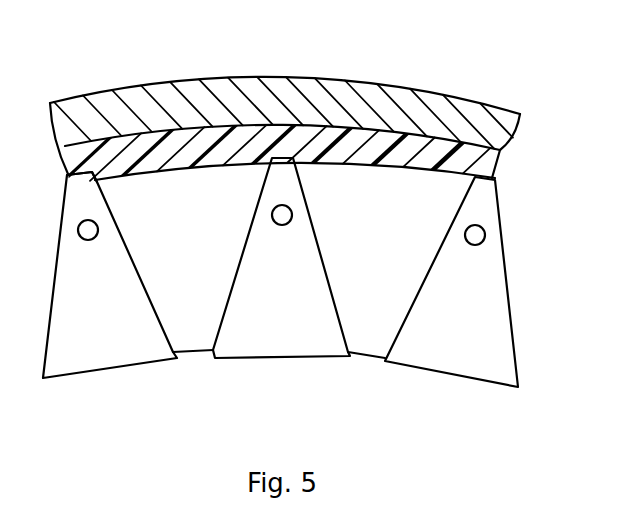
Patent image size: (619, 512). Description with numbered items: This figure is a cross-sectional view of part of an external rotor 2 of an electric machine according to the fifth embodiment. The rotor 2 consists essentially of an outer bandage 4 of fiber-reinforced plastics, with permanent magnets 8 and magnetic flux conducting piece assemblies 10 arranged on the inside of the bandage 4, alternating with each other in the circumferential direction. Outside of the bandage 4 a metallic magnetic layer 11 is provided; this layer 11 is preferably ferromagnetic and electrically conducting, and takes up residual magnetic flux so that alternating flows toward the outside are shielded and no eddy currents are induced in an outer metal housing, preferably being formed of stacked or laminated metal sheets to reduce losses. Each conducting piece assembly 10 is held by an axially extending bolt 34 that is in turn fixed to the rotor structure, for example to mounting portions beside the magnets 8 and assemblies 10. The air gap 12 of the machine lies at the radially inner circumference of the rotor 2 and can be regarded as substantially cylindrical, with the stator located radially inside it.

The rotor 2 is at (524, 214).
The bandage 4 is at (140, 140).
The permanent magnet 8 is at (115, 203).
The magnetic flux conducting piece assembly 10 is at (239, 342).
The metallic magnetic layer 11 is at (367, 93).
The air gap 12 is at (65, 399).
The bolt 34 is at (292, 215).